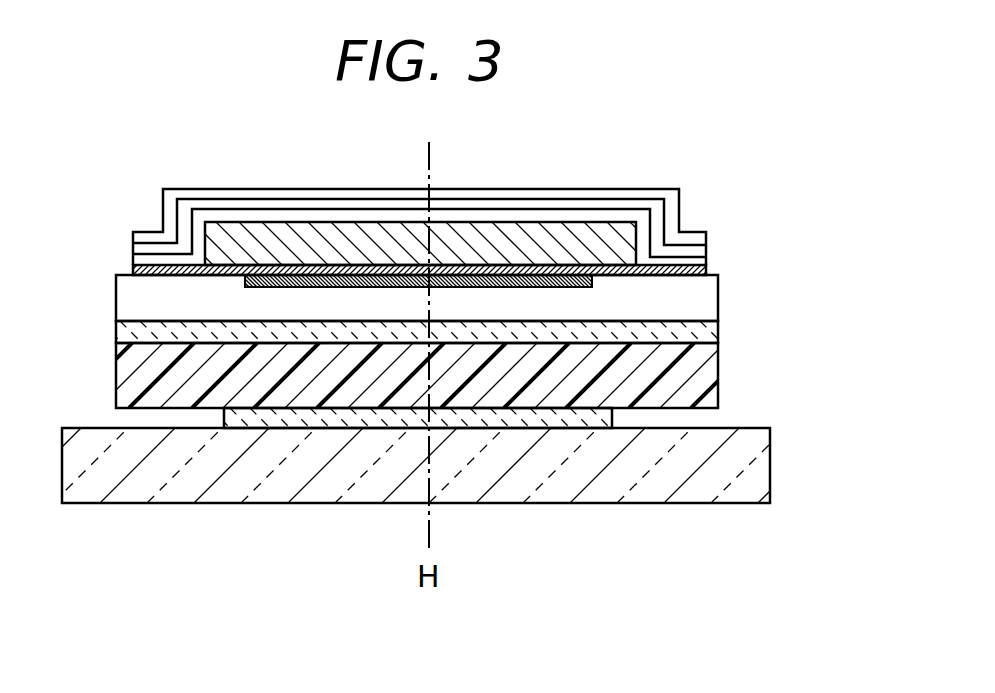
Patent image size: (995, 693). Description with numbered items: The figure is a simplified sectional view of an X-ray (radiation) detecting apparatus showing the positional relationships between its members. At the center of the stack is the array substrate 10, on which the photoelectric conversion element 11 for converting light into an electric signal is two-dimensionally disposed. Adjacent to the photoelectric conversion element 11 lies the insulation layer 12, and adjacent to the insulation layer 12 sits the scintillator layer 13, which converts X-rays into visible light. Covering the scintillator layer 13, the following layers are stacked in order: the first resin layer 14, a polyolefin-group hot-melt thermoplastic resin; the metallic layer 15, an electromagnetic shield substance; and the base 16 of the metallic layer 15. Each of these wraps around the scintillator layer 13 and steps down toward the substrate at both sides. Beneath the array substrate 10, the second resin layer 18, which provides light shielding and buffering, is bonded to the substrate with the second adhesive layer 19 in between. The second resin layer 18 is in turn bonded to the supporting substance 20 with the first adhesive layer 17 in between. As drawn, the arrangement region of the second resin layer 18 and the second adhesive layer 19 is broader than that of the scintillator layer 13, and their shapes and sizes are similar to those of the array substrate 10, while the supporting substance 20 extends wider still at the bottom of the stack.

The array substrate 10 is at (708, 302).
The photoelectric conversion element 11 is at (253, 288).
The insulation layer 12 is at (132, 270).
The scintillator layer 13 is at (215, 237).
The first resin layer 14 is at (710, 258).
The metallic layer 15 is at (658, 211).
The base 16 is at (628, 192).
The first adhesive layer 17 is at (582, 422).
The second resin layer 18 is at (708, 377).
The second adhesive layer 19 is at (708, 335).
The supporting substance 20 is at (760, 470).